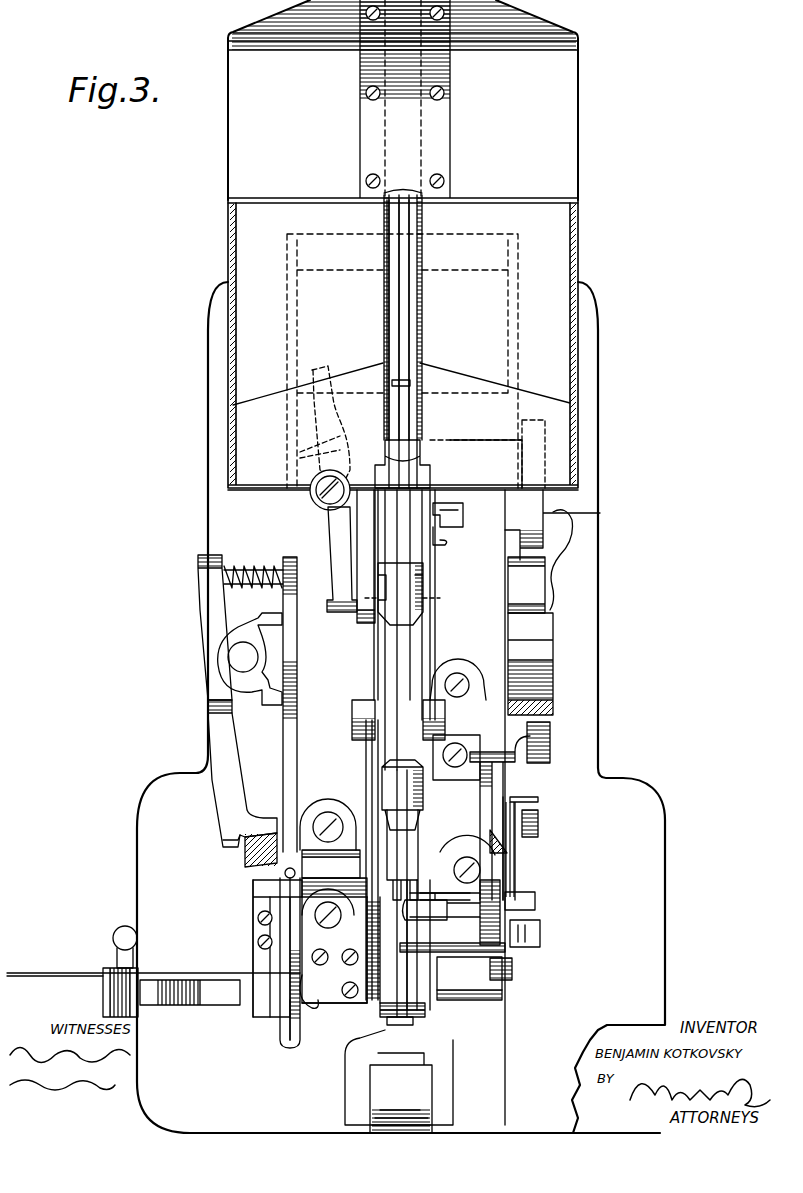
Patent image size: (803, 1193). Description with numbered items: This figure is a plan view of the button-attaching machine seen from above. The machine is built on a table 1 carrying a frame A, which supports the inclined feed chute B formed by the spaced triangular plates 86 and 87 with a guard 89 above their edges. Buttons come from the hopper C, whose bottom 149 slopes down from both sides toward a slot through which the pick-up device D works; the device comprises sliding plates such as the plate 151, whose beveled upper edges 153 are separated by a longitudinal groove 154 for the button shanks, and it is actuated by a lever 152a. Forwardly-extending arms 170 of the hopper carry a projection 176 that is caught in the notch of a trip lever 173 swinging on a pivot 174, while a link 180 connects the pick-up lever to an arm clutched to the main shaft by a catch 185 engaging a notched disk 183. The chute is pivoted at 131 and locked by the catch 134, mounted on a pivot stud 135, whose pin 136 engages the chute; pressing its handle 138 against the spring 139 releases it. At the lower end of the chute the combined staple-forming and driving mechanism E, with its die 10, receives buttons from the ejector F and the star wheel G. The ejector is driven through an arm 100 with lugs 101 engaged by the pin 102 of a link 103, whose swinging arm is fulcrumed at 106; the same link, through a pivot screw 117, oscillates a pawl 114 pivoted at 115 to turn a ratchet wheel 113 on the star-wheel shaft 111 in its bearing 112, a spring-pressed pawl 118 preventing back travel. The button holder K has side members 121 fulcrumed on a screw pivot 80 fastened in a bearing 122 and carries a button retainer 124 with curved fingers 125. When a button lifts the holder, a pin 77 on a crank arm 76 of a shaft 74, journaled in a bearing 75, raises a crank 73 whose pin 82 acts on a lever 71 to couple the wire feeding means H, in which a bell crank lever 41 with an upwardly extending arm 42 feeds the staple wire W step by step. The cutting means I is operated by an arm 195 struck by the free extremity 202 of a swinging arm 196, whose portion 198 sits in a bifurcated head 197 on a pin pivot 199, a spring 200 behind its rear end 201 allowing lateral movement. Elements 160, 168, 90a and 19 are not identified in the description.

The table 1 is at (401, 707).
The hopper C is at (578, 237).
The button pick-up device D is at (423, 324).
The longitudinal groove 154 is at (410, 302).
The sleeve 160 is at (386, 296).
The hopper bottom 149 is at (421, 320).
The upper edges of pick-up plates 153 is at (419, 351).
The lever 152a is at (440, 372).
The block 168 is at (392, 383).
The handle 138 is at (318, 404).
The spring 139 is at (300, 452).
The pivot 174 is at (553, 452).
The pivot stud 135 is at (318, 495).
The pivot 131 is at (350, 543).
The catch 134 is at (336, 568).
The rear end of lever 201 is at (206, 577).
The spring 200 is at (270, 556).
The bifurcated head 197 is at (286, 664).
The pin pivot 199 is at (250, 659).
The portion of lever 198 is at (218, 686).
The frame A is at (356, 630).
The guard 89 is at (400, 632).
The triangular plate 87 is at (392, 650).
The forwardly-extending arms 170 is at (432, 662).
The feed chute B is at (440, 640).
The triangular plate 86 is at (413, 652).
The projection 176 is at (465, 515).
The trip lever 173 is at (447, 541).
The collar 90a is at (426, 584).
The pin 136 is at (448, 600).
The pick-up plate 151 is at (508, 578).
The link 180 is at (543, 523).
The catch 185 is at (555, 584).
The disk 183 is at (547, 643).
The bearing 122 is at (416, 740).
The screw pivot 80 is at (356, 735).
The side members 121 is at (436, 808).
The bearing 75 is at (350, 840).
The shaft 74 is at (331, 864).
The crank arm 76 is at (334, 877).
The ejector F is at (402, 893).
The arm 100 is at (440, 862).
The pin 102 is at (445, 884).
The fulcrum 106 is at (540, 768).
The spring-pressed pawl 118 is at (526, 848).
The link 103 is at (510, 848).
The pawl 114 is at (520, 902).
The pivot 115 is at (541, 928).
The ratchet wheel 113 is at (514, 968).
The parallel lugs 101 is at (472, 932).
The bearing 112 is at (469, 978).
The shaft 111 is at (469, 985).
The pivot screw 117 is at (456, 945).
The swinging arm 196 is at (232, 795).
The free extremity 202 is at (248, 855).
The arm 195 is at (270, 883).
The lever 71 is at (270, 900).
The crank 73 is at (258, 926).
The pin 82 is at (275, 948).
The wire feeding means H is at (110, 948).
The wire W is at (50, 975).
The upwardly extending arm 42 is at (108, 995).
The bell crank lever 41 is at (180, 1003).
The cutting means I is at (292, 1035).
The pin 77 is at (334, 946).
The curved fingers 125 is at (380, 950).
The star wheel G is at (316, 991).
The button holder K is at (365, 1003).
The button retainer 124 is at (400, 1000).
The die 10 is at (395, 1034).
The staple-forming and driving mechanism E is at (428, 1026).
The pedestal 19 is at (425, 1061).